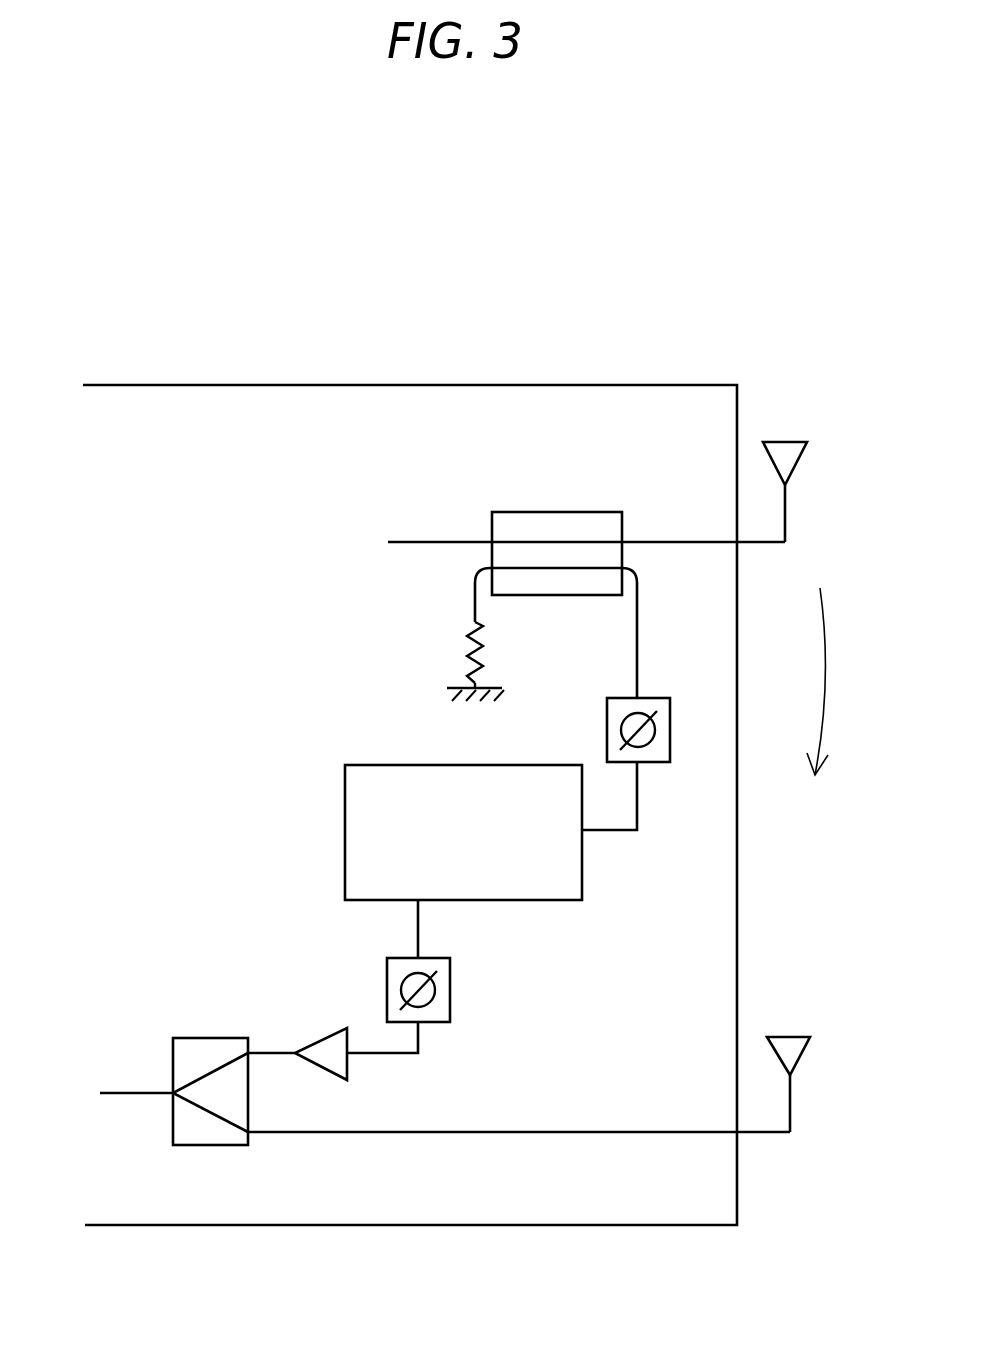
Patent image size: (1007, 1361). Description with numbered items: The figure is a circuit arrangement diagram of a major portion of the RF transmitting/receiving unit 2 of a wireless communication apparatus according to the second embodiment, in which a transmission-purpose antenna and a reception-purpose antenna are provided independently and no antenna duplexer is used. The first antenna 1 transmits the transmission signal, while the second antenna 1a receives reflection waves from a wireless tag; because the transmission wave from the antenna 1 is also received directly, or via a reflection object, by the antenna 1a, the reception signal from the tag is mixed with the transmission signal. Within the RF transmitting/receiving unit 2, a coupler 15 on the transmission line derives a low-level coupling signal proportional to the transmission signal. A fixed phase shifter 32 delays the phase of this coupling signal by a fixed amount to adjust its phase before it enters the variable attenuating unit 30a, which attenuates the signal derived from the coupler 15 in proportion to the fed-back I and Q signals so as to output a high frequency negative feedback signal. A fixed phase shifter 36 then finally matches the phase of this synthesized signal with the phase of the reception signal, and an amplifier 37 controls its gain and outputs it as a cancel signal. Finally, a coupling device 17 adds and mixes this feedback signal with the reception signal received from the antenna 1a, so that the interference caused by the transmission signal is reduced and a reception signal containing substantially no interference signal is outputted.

The antenna 1 is at (800, 442).
The antenna 1a is at (800, 1036).
The RF transmitting/receiving unit 2 is at (537, 385).
The coupler 15 is at (623, 558).
The coupling device 17 is at (192, 1145).
The variable attenuating unit 30a is at (582, 883).
The fixed phase shifter 32 is at (670, 723).
The fixed phase shifter 36 is at (438, 1022).
The amplifier 37 is at (327, 1072).